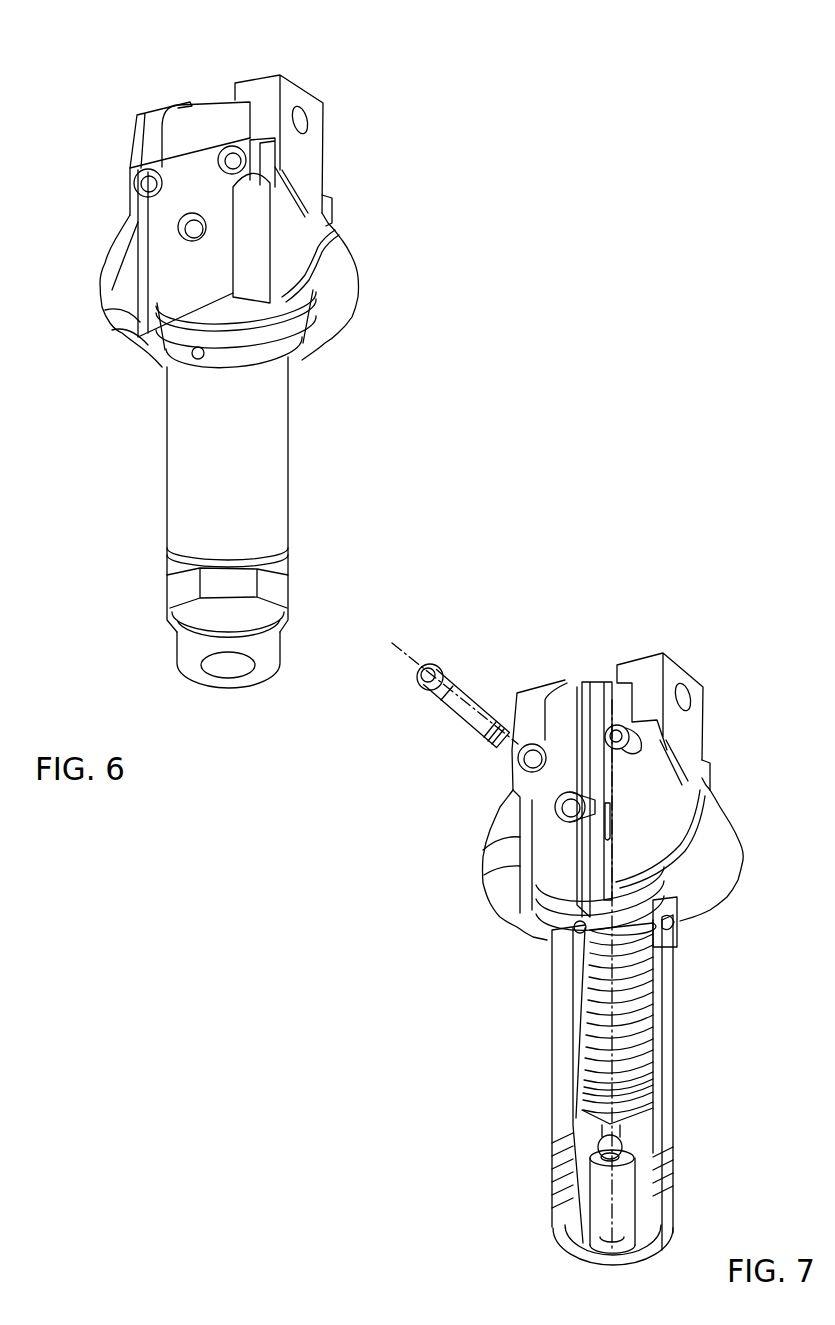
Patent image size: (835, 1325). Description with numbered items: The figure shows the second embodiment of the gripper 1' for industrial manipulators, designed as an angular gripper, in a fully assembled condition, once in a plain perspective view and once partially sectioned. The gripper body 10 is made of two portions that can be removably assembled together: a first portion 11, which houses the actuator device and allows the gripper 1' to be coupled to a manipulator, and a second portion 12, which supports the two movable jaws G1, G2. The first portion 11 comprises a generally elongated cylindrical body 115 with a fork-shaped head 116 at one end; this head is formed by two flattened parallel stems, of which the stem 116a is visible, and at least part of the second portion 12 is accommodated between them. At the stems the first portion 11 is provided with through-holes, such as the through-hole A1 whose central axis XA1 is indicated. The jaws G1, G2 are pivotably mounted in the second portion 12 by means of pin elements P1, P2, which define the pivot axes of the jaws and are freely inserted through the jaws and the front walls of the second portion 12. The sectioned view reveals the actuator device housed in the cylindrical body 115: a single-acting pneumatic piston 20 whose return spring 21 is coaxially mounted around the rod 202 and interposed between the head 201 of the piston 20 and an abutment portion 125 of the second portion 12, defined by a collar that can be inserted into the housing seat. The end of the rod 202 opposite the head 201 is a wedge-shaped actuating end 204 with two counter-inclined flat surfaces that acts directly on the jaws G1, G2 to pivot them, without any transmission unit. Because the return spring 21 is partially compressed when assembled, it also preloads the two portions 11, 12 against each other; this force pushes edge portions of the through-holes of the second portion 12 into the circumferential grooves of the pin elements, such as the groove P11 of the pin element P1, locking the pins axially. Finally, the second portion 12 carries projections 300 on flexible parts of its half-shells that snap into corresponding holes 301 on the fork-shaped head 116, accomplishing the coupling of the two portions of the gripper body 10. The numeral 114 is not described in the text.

In FIG. 6, the gripper 1' is at (557, 153).
In FIG. 7, the gripper 1' is at (337, 989).
In FIG. 6, the gripper body 10 is at (313, 353).
In FIG. 6, the first portion 11 is at (165, 491).
In FIG. 7, the first portion 11 is at (552, 1142).
In FIG. 6, the second portion 12 is at (360, 288).
In FIG. 7, the second portion 12 is at (743, 860).
In FIG. 6, the outlet opening 114 is at (229, 665).
In FIG. 7, the outlet opening 114 is at (602, 1242).
In FIG. 6, the cylindrical body 115 is at (290, 453).
In FIG. 7, the cylindrical body 115 is at (564, 1043).
In FIG. 6, the fork-shaped head 116 is at (176, 288).
In FIG. 7, the fork-shaped head 116 is at (544, 925).
In FIG. 6, the stem 116a is at (177, 205).
In FIG. 7, the stem 116a is at (547, 863).
In FIG. 7, the abutment portion 125 is at (633, 907).
In FIG. 7, the pneumatic piston 20 is at (640, 1027).
In FIG. 7, the head 201 is at (657, 1110).
In FIG. 7, the rod 202 is at (657, 1000).
In FIG. 7, the wedge-shaped actuating end 204 is at (657, 960).
In FIG. 7, the return spring 21 is at (655, 1057).
In FIG. 7, the projection 300 is at (556, 810).
In FIG. 6, the hole 301 is at (178, 233).
In FIG. 7, the through-hole A1 is at (510, 763).
In FIG. 6, the jaw G1 is at (133, 142).
In FIG. 7, the jaw G1 is at (532, 684).
In FIG. 6, the jaw G2 is at (334, 151).
In FIG. 7, the jaw G2 is at (691, 670).
In FIG. 6, the pin element P1 is at (143, 170).
In FIG. 7, the pin element P1 is at (438, 666).
In FIG. 7, the circumferential groove P11 is at (512, 746).
In FIG. 6, the pin element P2 is at (230, 148).
In FIG. 7, the pin element P2 is at (650, 748).
In FIG. 7, the central axis XA1 is at (398, 648).